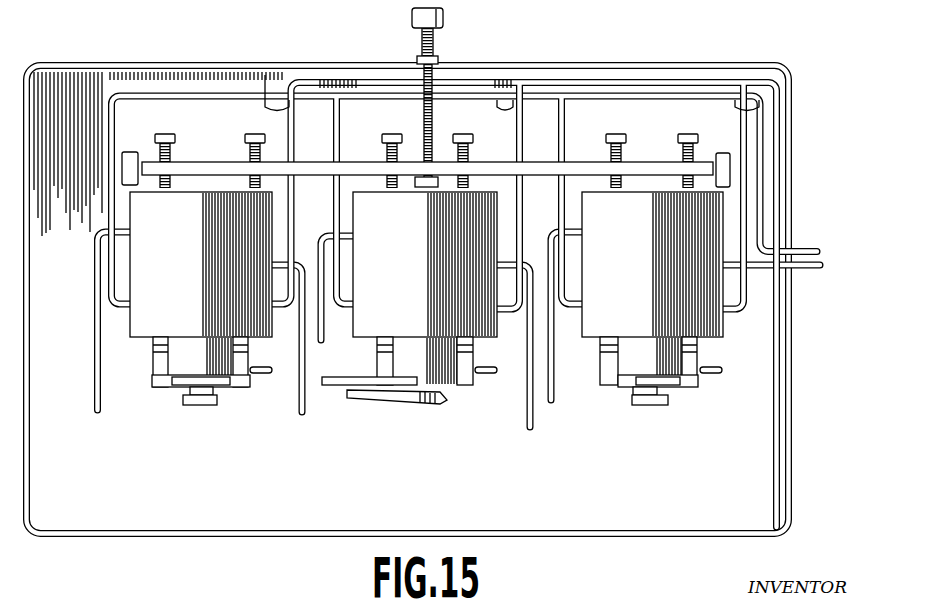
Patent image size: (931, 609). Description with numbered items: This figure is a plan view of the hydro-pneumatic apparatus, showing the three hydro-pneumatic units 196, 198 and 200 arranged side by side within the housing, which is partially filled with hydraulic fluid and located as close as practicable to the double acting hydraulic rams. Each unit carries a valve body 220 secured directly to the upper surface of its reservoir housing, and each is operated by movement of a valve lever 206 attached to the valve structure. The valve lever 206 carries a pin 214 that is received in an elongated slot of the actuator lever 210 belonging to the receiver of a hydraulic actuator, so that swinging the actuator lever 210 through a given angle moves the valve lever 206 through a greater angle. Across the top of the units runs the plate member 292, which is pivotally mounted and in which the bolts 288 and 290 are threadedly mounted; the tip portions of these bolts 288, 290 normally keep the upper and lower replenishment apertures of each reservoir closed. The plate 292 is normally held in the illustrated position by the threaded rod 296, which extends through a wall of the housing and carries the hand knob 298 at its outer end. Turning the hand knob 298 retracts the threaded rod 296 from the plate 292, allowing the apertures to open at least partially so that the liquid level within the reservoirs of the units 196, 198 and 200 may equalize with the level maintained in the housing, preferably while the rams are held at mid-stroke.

The hydro-pneumatic unit 196 is at (192, 319).
The hydro-pneumatic unit 198 is at (406, 309).
The hydro-pneumatic unit 200 is at (596, 342).
The valve lever 206 is at (333, 387).
The actuator lever 210 is at (397, 398).
The pin 214 is at (203, 400).
The valve body 220 is at (188, 271).
The bolt 288 is at (176, 137).
The bolt 290 is at (250, 134).
The plate member 292 is at (650, 168).
The threaded rod 296 is at (433, 130).
The hand knob 298 is at (443, 24).